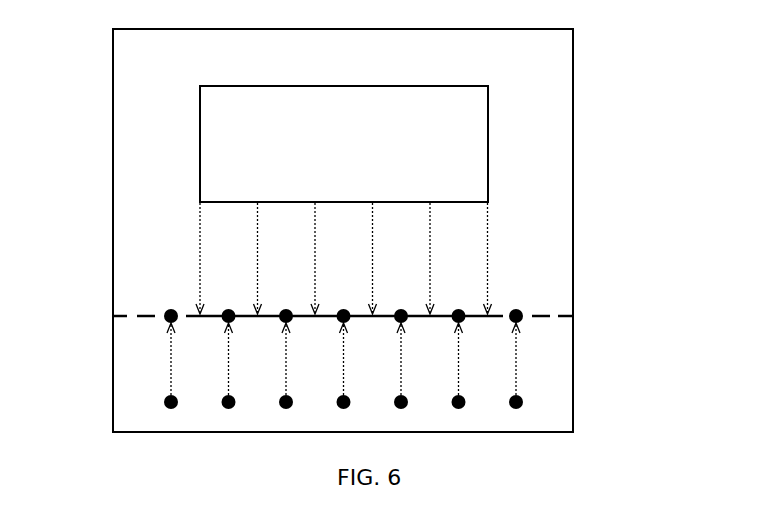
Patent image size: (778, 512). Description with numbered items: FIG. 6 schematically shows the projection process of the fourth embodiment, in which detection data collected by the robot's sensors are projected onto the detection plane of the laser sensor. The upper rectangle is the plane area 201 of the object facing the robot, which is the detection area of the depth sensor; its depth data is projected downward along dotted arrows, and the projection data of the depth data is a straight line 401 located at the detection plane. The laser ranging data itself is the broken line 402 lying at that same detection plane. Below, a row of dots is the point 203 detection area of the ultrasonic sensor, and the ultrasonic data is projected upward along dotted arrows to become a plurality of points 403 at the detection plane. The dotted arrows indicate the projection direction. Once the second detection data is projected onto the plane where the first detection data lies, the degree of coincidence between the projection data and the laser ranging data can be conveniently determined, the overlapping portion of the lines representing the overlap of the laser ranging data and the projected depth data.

The plane area 201 is at (442, 142).
The straight line 401 is at (372, 311).
The broken line 402 is at (540, 312).
The points 403 is at (170, 312).
The point 203 is at (523, 398).